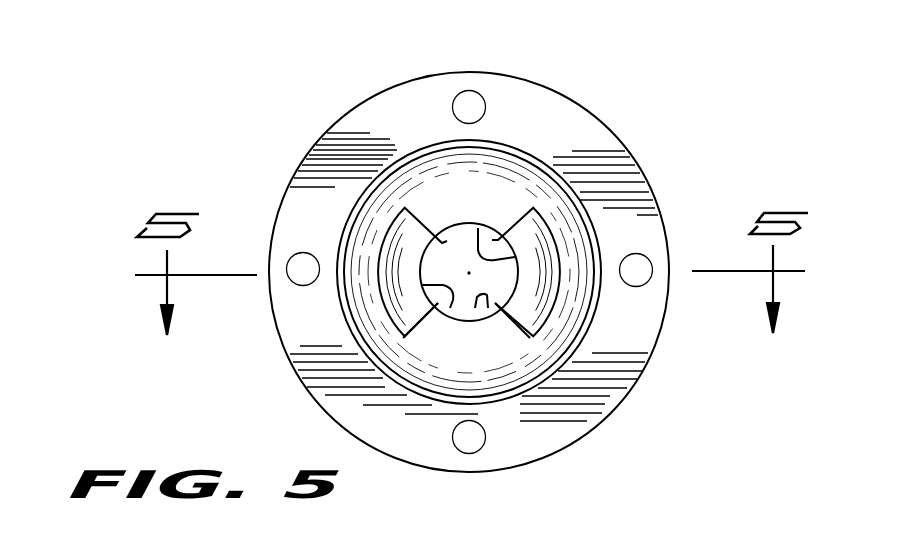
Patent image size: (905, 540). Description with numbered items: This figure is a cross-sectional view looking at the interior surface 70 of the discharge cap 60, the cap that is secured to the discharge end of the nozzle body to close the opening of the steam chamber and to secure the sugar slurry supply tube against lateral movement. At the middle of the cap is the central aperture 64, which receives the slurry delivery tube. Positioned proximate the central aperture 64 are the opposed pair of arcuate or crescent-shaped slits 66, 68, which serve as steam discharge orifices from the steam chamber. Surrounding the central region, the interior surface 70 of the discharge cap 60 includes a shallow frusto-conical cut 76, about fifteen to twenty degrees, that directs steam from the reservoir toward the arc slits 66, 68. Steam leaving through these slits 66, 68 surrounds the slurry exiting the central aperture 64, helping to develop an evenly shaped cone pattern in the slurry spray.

The discharge cap 60 is at (590, 108).
The interior surface 70 is at (493, 157).
The frusto-conical cut 76 is at (423, 192).
The arcuate slit 68 is at (478, 230).
The arcuate slit 66 is at (452, 306).
The central aperture 64 is at (488, 308).